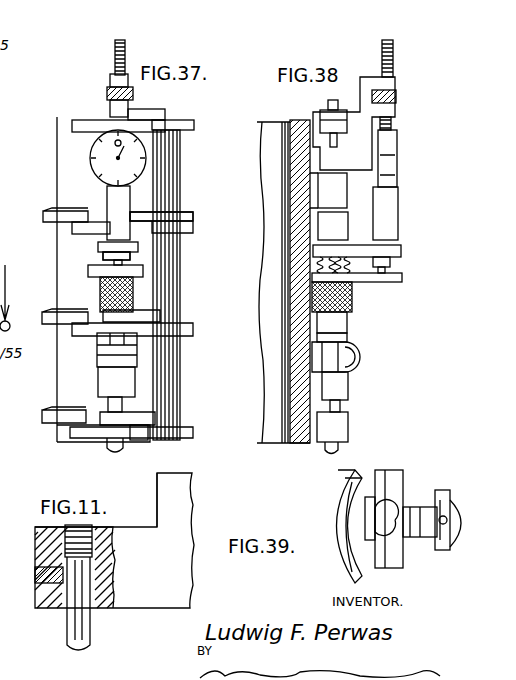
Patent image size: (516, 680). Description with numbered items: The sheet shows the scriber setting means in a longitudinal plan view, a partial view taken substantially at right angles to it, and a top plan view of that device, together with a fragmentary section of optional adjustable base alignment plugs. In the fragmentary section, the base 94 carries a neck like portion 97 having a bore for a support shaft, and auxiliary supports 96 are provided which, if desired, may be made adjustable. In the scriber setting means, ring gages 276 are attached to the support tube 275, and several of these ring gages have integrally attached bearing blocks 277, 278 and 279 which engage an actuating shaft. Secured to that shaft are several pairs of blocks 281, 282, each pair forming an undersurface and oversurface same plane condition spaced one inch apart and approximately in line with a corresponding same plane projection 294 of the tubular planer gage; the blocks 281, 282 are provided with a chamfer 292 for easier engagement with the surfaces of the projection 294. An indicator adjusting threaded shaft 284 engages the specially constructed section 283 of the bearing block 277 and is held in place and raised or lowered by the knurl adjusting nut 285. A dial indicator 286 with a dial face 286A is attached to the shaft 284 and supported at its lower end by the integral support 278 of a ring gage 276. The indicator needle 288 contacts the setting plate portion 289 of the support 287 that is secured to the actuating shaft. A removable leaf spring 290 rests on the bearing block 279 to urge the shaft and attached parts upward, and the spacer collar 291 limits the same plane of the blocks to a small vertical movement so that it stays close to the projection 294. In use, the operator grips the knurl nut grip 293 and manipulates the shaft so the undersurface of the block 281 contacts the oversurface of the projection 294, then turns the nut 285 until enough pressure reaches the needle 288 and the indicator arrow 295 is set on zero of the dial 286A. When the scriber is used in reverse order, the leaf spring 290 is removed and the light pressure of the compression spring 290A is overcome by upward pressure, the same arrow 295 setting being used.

In FIG. 37, the indicator arrow 295 is at (112, 152).
In FIG. 37, the dial indicator 286 is at (105, 200).
In FIG. 38, the dial indicator 286 is at (398, 223).
In FIG. 37, the dial face 286A is at (146, 163).
In FIG. 38, the dial face 286A is at (388, 152).
In FIG. 39, the dial face 286A is at (450, 497).
In FIG. 37, the bearing block 278 is at (95, 235).
In FIG. 38, the bearing block 278 is at (383, 240).
In FIG. 39, the bearing block 278 is at (383, 565).
In FIG. 37, the block 281 is at (153, 205).
In FIG. 38, the block 281 is at (327, 117).
In FIG. 39, the block 281 is at (392, 483).
In FIG. 37, the block 282 is at (100, 245).
In FIG. 38, the block 282 is at (328, 132).
In FIG. 39, the block 282 is at (350, 580).
In FIG. 37, the setting plate portion 289 is at (90, 270).
In FIG. 38, the setting plate portion 289 is at (400, 280).
In FIG. 37, the knurl nut grip 293 is at (133, 292).
In FIG. 38, the knurl nut grip 293 is at (352, 300).
In FIG. 37, the indicator needle 288 is at (127, 255).
In FIG. 38, the indicator needle 288 is at (403, 250).
In FIG. 37, the leaf spring 290 is at (137, 360).
In FIG. 38, the leaf spring 290 is at (365, 357).
In FIG. 38, the compression spring 290A is at (310, 258).
In FIG. 37, the bearing block 279 is at (123, 382).
In FIG. 38, the bearing block 279 is at (348, 385).
In FIG. 37, the same plane projection 294 is at (188, 220).
In FIG. 37, the ring gage 276 is at (170, 177).
In FIG. 38, the ring gage 276 is at (300, 263).
In FIG. 38, the support tube 275 is at (290, 410).
In FIG. 38, the support 287 is at (323, 272).
In FIG. 38, the indicator adjusting threaded shaft 284 is at (393, 43).
In FIG. 38, the knurl adjusting nut 285 is at (395, 97).
In FIG. 38, the specially constructed section 283 is at (360, 92).
In FIG. 39, the specially constructed section 283 is at (423, 523).
In FIG. 38, the spacer collar 291 is at (338, 193).
In FIG. 39, the chamfer 292 is at (377, 472).
In FIG. 39, the bearing block 277 is at (423, 496).
In FIG. 11, the neck like portion 97 is at (193, 515).
In FIG. 11, the base 94 is at (187, 592).
In FIG. 11, the auxiliary supports 96 is at (90, 632).